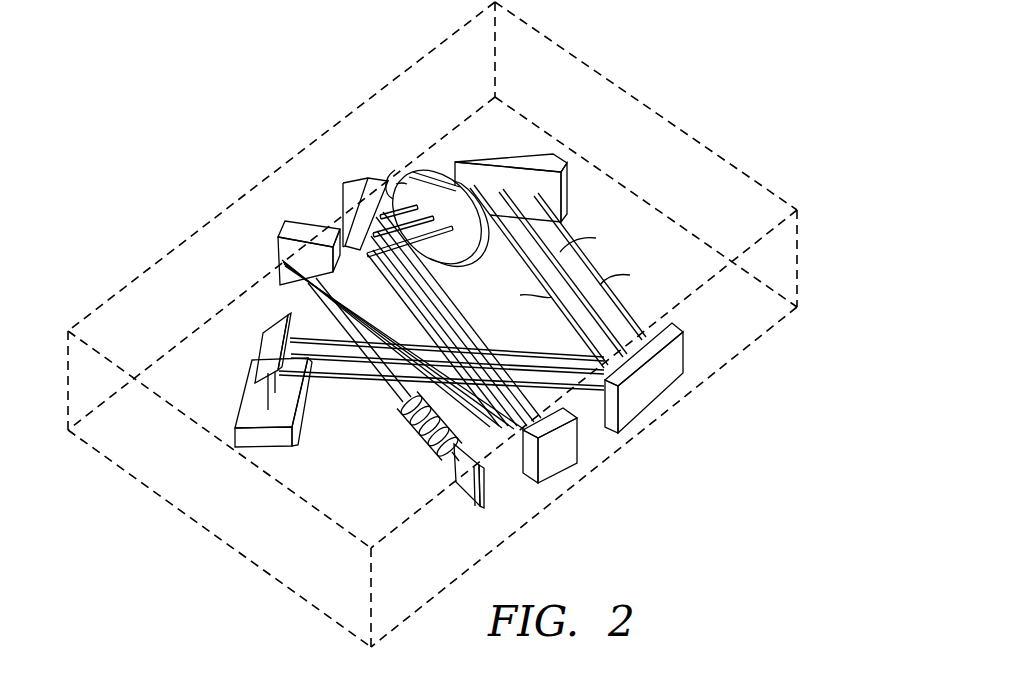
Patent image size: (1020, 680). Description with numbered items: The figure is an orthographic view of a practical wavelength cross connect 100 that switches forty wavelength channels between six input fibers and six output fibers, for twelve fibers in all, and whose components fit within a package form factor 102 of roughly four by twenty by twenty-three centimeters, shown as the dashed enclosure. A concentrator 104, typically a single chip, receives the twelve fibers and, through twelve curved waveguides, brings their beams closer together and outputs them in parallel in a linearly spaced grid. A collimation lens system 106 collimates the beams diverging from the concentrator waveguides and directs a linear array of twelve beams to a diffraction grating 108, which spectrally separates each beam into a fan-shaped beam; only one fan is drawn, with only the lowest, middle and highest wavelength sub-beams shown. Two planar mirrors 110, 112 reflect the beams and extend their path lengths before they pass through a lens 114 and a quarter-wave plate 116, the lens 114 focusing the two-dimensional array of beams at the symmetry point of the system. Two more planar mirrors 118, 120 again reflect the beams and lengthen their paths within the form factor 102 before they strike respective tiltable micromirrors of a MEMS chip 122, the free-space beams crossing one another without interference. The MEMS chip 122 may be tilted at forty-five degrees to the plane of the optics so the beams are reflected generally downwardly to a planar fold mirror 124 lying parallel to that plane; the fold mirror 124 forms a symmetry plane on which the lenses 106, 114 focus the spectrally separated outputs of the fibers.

The wavelength cross connect 100 is at (247, 120).
The form factor 102 is at (313, 136).
The concentrator 104 is at (462, 487).
The collimation lens system 106 is at (410, 420).
The diffraction grating 108 is at (283, 262).
The planar mirror 110 is at (560, 460).
The planar mirror 112 is at (368, 178).
The lens 114 is at (402, 186).
The quarter-wave plate 116 is at (443, 182).
The planar mirror 118 is at (561, 164).
The planar mirror 120 is at (648, 386).
The MEMS chip 122 is at (262, 340).
The planar fold mirror 124 is at (240, 420).